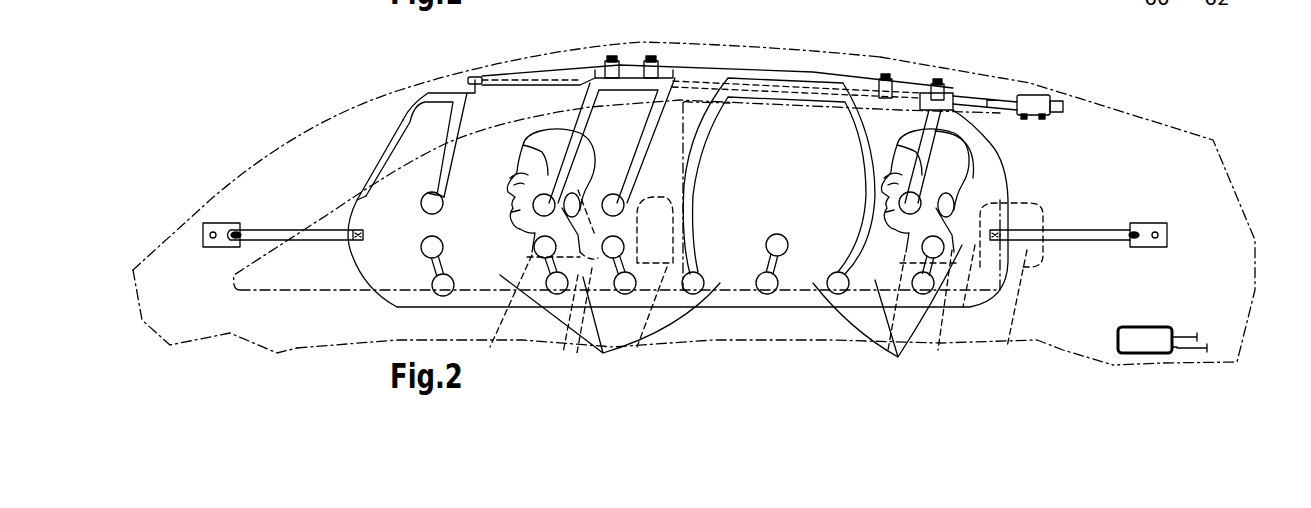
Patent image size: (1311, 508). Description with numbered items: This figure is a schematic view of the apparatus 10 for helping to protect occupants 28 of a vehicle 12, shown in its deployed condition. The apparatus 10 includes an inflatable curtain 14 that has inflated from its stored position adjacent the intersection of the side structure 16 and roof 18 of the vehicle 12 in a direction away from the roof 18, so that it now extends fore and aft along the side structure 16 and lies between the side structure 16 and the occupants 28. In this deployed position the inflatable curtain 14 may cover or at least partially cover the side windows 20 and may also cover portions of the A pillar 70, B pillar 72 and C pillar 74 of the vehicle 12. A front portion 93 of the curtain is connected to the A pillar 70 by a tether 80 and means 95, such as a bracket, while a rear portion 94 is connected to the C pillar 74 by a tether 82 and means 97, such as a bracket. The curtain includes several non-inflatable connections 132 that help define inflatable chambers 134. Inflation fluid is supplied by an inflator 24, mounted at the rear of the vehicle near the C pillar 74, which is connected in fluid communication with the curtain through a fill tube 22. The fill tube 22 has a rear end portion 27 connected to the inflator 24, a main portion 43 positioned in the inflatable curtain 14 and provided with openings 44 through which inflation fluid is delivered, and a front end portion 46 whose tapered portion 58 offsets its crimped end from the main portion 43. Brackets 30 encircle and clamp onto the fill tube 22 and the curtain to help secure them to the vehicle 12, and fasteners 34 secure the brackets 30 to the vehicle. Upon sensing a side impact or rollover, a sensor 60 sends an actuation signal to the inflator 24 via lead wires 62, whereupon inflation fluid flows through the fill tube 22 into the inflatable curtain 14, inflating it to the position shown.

The apparatus 10 is at (566, 34).
The vehicle 12 is at (360, 57).
The inflatable curtain 14 is at (477, 270).
The side structure 16 is at (713, 313).
The roof 18 is at (737, 60).
The side windows 20 is at (337, 273).
The fill tube 22 is at (995, 97).
The inflator 24 is at (1037, 100).
The rear end portion 27 is at (1017, 97).
The occupants 28 is at (512, 214).
The brackets 30 is at (647, 58).
The fasteners 34 is at (607, 58).
The main portion 43 is at (790, 80).
The openings 44 is at (517, 73).
The front end portion 46 is at (467, 78).
The tapered portion 58 is at (480, 73).
The sensor 60 is at (1142, 343).
The lead wires 62 is at (1060, 108).
The A pillar 70 is at (289, 173).
The B pillar 72 is at (662, 178).
The C pillar 74 is at (1193, 267).
The tether 80 is at (323, 235).
The tether 82 is at (1093, 237).
The front portion 93 is at (357, 199).
The rear portion 94 is at (987, 167).
The means 95 is at (227, 242).
The means 97 is at (1167, 232).
The non-inflatable connections 132 is at (423, 236).
The inflatable chambers 134 is at (731, 314).